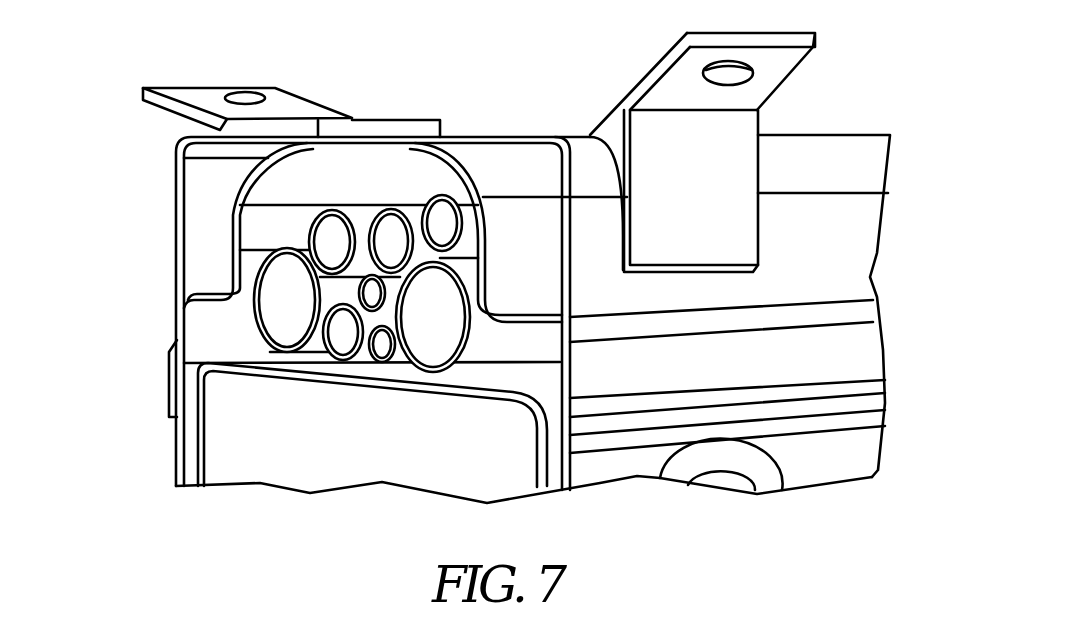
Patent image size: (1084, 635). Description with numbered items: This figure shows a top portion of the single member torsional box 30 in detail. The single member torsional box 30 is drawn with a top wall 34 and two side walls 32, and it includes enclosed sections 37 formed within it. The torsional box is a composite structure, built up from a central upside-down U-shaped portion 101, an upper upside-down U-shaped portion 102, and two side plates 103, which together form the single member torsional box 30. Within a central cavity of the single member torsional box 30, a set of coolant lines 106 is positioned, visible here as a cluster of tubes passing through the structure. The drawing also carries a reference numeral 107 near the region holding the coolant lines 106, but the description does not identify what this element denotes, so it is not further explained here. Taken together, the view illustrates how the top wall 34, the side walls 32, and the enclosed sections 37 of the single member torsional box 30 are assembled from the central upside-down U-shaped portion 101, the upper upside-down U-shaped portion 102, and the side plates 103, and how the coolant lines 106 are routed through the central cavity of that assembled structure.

The single member torsional box 30 is at (470, 137).
The side walls 32 is at (175, 338).
The top wall 34 is at (405, 140).
The enclosed sections 37 is at (203, 213).
The central upside-down U-shaped portion 101 is at (193, 447).
The upper upside-down U-shaped portion 102 is at (803, 223).
The side plates 103 is at (167, 392).
The coolant lines 106 is at (390, 240).
The tube plate 107 is at (285, 223).